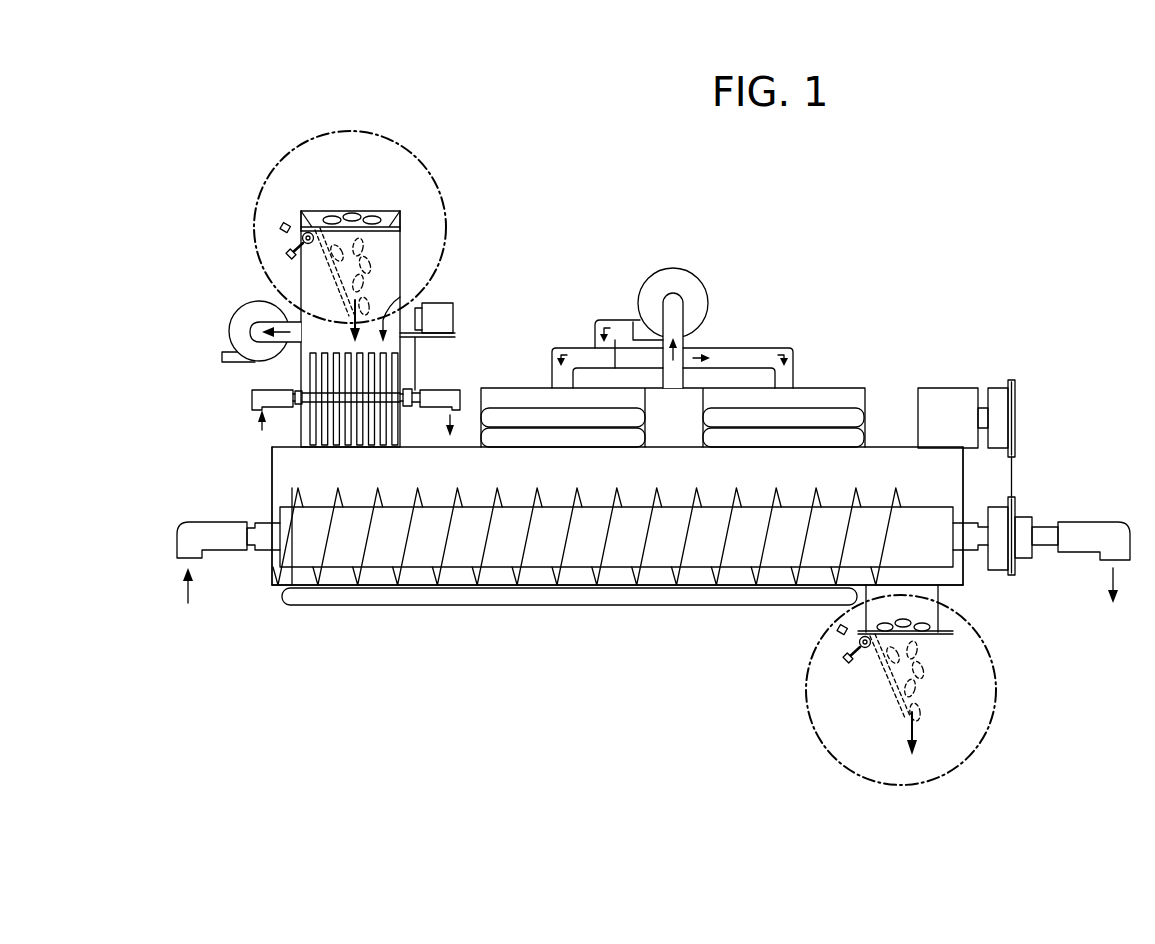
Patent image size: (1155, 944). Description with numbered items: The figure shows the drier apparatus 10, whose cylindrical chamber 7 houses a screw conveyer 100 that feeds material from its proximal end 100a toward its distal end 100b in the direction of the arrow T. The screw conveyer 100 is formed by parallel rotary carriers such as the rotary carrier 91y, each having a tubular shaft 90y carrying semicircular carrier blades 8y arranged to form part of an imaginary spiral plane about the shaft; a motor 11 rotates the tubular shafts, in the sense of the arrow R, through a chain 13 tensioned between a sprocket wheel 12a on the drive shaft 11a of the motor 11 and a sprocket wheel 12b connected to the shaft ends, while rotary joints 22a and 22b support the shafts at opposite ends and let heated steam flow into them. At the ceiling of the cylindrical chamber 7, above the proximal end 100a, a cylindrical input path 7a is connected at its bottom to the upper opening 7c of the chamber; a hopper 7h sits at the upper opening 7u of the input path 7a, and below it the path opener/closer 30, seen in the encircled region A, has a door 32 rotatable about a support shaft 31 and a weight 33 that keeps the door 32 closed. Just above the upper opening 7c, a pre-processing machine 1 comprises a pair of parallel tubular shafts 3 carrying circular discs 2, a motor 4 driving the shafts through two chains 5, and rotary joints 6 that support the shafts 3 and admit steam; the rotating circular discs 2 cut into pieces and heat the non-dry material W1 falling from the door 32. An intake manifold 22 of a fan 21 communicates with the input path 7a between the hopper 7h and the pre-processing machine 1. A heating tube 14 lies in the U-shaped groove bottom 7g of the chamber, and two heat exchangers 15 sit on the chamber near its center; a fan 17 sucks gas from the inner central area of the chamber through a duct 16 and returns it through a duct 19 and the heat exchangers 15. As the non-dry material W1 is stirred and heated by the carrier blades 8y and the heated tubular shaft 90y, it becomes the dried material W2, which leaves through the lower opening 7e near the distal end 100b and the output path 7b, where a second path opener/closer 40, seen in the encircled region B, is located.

The pre-processing machine 1 is at (418, 271).
The circular discs 2 is at (318, 434).
The tubular shafts 3 is at (320, 393).
The motor 4 is at (453, 315).
The chains 5 is at (417, 358).
The rotary joints 6 is at (252, 397).
The cylindrical chamber 7 is at (887, 447).
The input path 7a is at (403, 277).
The output path 7b is at (858, 612).
The upper opening 7c is at (320, 448).
The lower opening 7e is at (897, 585).
The bottom 7g is at (661, 590).
The hopper 7h is at (305, 212).
The upper opening 7u is at (340, 212).
The carrier blades 8y is at (481, 573).
The drier apparatus 10 is at (672, 280).
The motor 11 is at (930, 393).
The drive shaft 11a is at (985, 413).
The sprocket wheel 12a is at (1017, 390).
The sprocket wheel 12b is at (1013, 572).
The chain 13 is at (1014, 478).
The heating tube 14 is at (430, 603).
The heat exchangers 15 is at (505, 418).
The duct 16 is at (675, 313).
The fan 17 is at (688, 283).
The duct 19 is at (583, 345).
The fan 21 is at (243, 318).
The intake manifold 22 is at (258, 340).
The rotary joint 22a is at (190, 520).
The rotary joint 22b is at (1108, 522).
The path opener/closer 30 is at (330, 238).
The support shaft 31 is at (300, 236).
The door 32 is at (400, 222).
The weight 33 is at (283, 226).
The path opener/closer 40 is at (866, 661).
The tubular shaft 90y is at (400, 535).
The rotary carrier 91y is at (587, 602).
The screw conveyer 100 is at (651, 602).
The proximal end 100a is at (302, 573).
The distal end 100b is at (953, 568).
The enlarged region A is at (296, 149).
The enlarged region B is at (824, 746).
The non-dry material W1 is at (365, 215).
The dried material W2 is at (950, 625).
The transport direction T is at (597, 460).
The rotation direction R is at (928, 572).